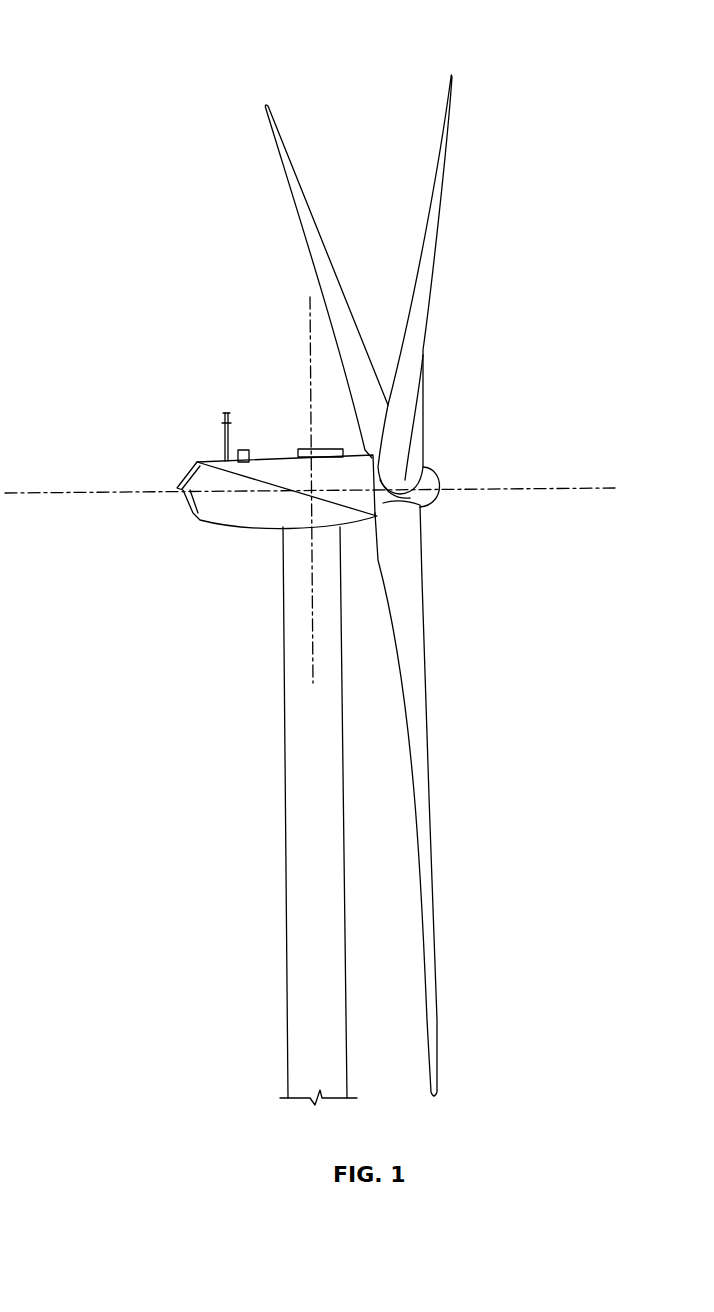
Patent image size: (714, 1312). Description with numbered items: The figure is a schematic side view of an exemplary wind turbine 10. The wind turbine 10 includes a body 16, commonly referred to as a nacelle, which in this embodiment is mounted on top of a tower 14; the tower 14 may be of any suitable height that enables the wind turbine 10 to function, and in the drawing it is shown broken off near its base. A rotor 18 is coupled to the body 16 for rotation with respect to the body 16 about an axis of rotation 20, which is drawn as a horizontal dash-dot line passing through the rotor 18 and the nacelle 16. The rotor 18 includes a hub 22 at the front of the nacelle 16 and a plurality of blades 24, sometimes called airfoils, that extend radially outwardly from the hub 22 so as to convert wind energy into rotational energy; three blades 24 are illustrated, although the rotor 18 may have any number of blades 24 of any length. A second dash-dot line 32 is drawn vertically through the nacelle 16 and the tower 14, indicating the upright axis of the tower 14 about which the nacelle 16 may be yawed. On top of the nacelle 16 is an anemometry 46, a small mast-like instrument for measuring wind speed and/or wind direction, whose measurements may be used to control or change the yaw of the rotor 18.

The wind turbine 10 is at (186, 131).
The tower 14 is at (285, 778).
The body 16 is at (240, 530).
The rotor 18 is at (391, 585).
The axis of rotation 20 is at (565, 488).
The hub 22 is at (440, 497).
The blades 24 is at (307, 193).
The tower axis 32 is at (308, 348).
The anemometry 46 is at (223, 425).